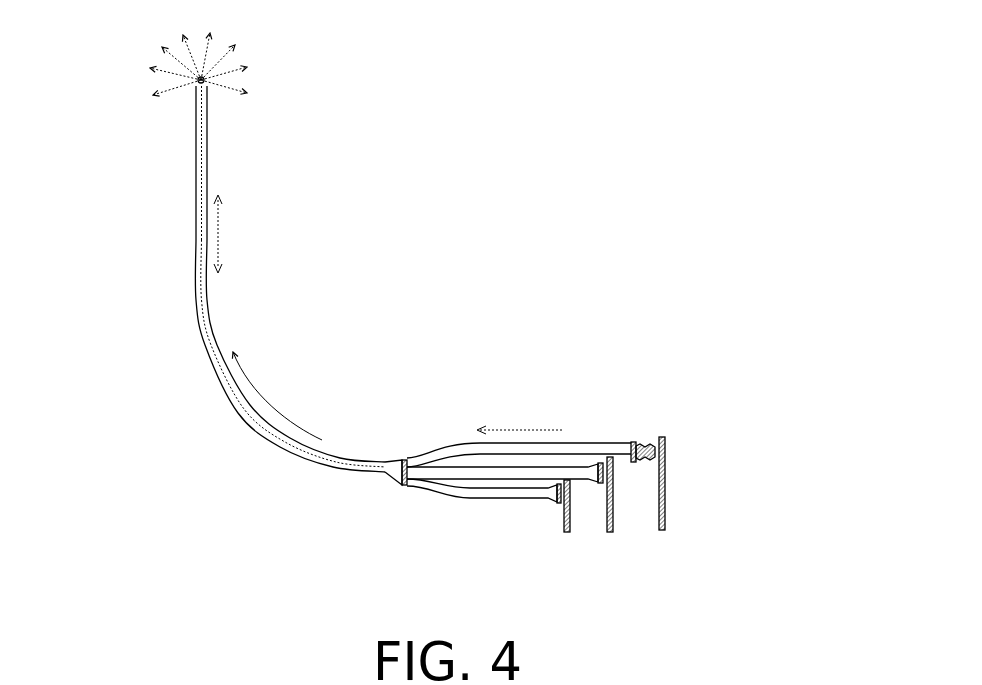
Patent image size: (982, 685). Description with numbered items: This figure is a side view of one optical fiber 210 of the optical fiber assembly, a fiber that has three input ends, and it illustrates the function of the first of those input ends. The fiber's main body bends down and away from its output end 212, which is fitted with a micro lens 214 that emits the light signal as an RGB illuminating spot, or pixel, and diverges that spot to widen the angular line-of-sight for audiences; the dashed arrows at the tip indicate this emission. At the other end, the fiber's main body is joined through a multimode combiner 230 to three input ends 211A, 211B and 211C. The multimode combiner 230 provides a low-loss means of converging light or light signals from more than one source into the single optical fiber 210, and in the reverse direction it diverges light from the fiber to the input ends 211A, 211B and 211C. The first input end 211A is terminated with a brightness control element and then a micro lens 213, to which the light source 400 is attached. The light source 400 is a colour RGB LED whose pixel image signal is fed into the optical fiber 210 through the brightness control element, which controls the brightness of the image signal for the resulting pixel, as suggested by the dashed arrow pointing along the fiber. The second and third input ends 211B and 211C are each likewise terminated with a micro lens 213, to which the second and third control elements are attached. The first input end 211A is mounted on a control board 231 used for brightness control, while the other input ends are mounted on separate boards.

The optical fiber 210 is at (267, 435).
The output end 212 is at (197, 113).
The micro lens 214 is at (203, 86).
The multimode combiner 230 is at (390, 473).
The first input end 211A is at (545, 448).
The second input end 211B is at (453, 473).
The third input end 211C is at (460, 492).
The light source 400 is at (723, 500).
The micro lens 213 is at (645, 460).
The control board 231 is at (663, 530).